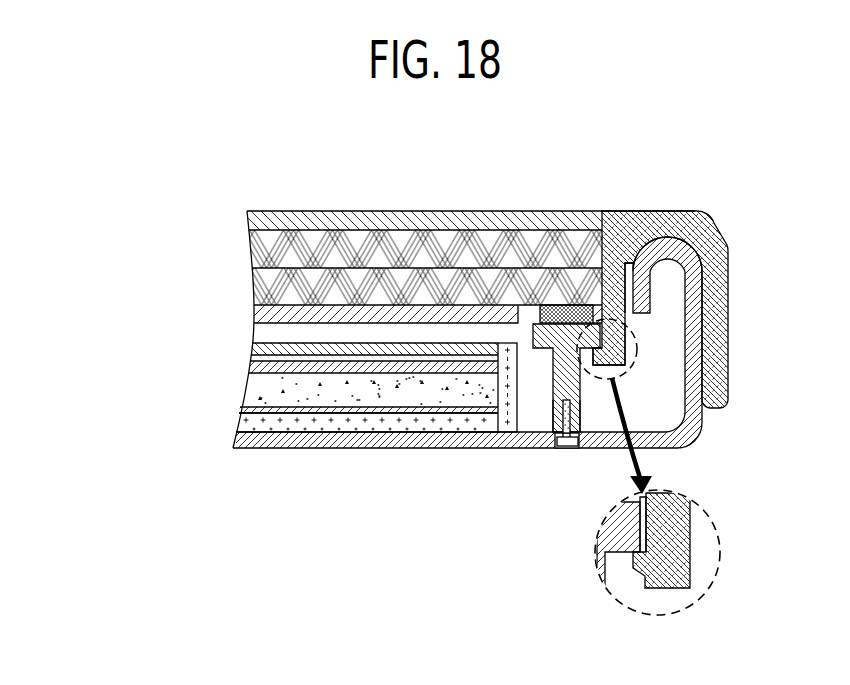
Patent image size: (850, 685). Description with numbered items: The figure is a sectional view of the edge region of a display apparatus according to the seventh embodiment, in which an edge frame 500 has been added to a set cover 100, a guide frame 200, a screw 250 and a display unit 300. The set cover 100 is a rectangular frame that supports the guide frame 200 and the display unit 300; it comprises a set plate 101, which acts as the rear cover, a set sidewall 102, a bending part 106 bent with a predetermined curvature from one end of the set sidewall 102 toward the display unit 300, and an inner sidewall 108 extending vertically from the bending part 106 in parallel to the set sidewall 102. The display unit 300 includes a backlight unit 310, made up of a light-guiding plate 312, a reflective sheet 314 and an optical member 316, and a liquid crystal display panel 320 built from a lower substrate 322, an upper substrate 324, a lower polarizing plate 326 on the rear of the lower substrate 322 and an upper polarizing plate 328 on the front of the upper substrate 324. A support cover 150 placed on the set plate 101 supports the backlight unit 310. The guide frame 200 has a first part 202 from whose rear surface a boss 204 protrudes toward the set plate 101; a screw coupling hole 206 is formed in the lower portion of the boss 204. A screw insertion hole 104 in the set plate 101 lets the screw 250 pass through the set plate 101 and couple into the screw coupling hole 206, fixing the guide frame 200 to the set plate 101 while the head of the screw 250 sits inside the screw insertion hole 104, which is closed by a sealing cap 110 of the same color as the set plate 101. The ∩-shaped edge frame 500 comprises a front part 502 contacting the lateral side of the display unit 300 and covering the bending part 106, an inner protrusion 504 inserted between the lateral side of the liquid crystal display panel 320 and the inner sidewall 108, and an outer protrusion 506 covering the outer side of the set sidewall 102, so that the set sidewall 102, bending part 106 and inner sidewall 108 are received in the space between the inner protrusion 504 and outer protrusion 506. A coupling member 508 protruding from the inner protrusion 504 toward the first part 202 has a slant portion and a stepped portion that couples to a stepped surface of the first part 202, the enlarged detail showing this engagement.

The set cover 100 is at (708, 453).
The set plate 101 is at (246, 448).
The set sidewall 102 is at (695, 298).
The screw insertion hole 104 is at (584, 449).
The bending part 106 is at (672, 243).
The inner sidewall 108 is at (646, 277).
The sealing cap 110 is at (561, 415).
The support cover 150 is at (246, 425).
The guide frame 200 is at (428, 500).
The first part 202 is at (545, 341).
The boss 204 is at (553, 376).
The screw coupling hole 206 is at (562, 401).
The screw 250 is at (567, 312).
The display unit 300 is at (75, 260).
The backlight unit 310 is at (117, 357).
The light-guiding plate 312 is at (247, 393).
The reflective sheet 314 is at (247, 409).
The optical member 316 is at (248, 370).
The liquid crystal display panel 320 is at (132, 210).
The lower substrate 322 is at (248, 290).
The upper substrate 324 is at (248, 251).
The lower polarizing plate 326 is at (252, 321).
The upper polarizing plate 328 is at (248, 222).
The edge frame 500 is at (728, 200).
The front part 502 is at (663, 222).
The inner protrusion 504 is at (622, 322).
The outer protrusion 506 is at (712, 370).
The coupling member 508 is at (599, 370).